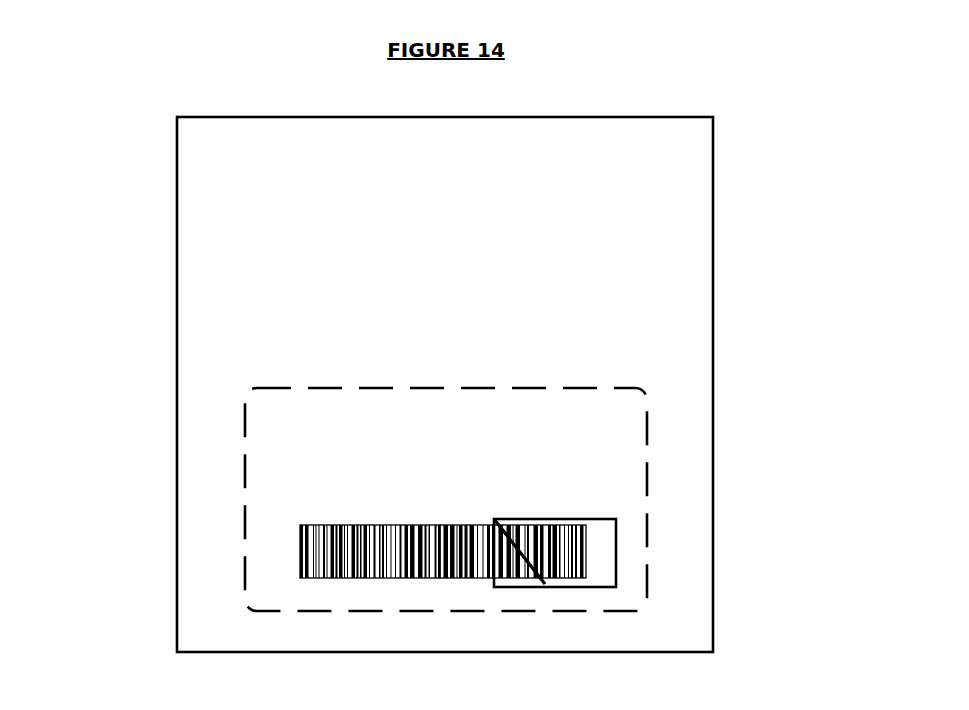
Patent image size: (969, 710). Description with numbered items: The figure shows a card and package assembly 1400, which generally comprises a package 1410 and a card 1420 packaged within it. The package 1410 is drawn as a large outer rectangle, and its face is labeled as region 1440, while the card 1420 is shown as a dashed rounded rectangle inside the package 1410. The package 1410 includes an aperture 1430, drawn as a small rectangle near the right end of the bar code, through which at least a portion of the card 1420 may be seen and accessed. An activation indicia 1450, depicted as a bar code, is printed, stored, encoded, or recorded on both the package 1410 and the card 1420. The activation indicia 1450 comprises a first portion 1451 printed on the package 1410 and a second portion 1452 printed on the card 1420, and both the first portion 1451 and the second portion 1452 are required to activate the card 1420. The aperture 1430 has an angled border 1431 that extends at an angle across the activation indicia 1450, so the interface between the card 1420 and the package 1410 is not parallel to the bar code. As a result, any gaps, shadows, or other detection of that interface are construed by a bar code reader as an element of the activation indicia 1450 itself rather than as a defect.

The card and package assembly 1400 is at (149, 391).
The package 1410 is at (714, 299).
The card 1420 is at (648, 440).
The aperture 1430 is at (617, 548).
The angled border 1431 is at (540, 584).
The label face 1440 is at (253, 162).
The activation indicia 1450 is at (392, 464).
The first portion 1451 is at (326, 526).
The second portion 1452 is at (564, 526).